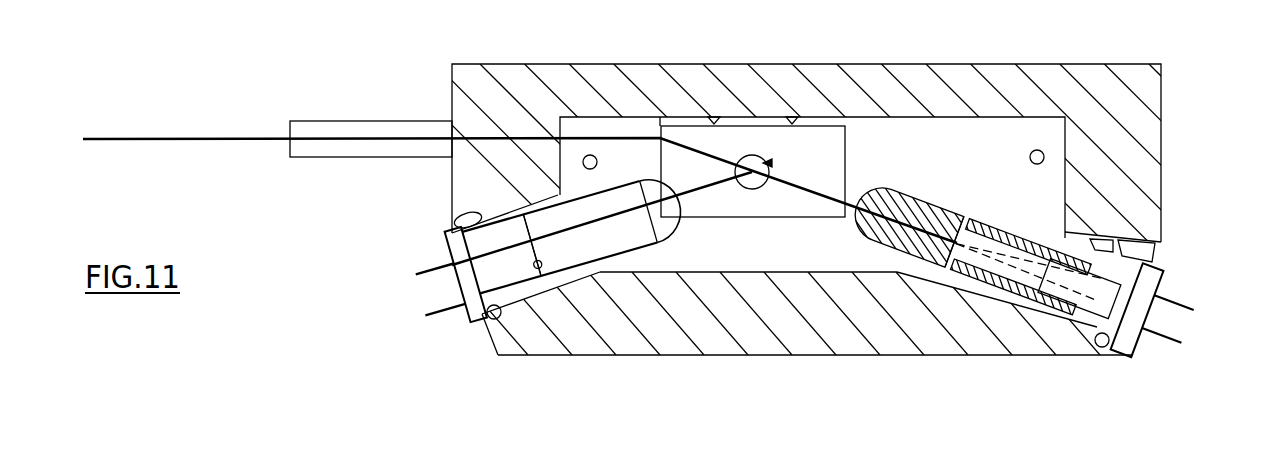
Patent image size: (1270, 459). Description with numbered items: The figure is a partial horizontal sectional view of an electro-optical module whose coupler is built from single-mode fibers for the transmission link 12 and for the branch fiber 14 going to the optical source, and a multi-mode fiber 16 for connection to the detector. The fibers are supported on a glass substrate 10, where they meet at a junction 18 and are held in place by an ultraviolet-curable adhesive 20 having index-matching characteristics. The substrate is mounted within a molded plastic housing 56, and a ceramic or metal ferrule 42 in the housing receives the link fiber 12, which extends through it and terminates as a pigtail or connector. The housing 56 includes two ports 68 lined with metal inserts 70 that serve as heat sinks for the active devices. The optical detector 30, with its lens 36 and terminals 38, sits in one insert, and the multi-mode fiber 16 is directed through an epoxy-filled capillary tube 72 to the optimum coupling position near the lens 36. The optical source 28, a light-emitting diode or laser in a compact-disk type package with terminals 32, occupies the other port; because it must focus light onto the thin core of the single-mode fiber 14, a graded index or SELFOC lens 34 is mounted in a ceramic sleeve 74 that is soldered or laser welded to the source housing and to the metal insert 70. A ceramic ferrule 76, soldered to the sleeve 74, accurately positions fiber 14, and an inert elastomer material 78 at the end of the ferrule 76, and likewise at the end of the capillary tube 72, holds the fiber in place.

The glass substrate 10 is at (846, 133).
The link fiber 12 is at (222, 137).
The branch fiber 14 is at (792, 186).
The branch fiber 16 is at (720, 182).
The junction 18 is at (770, 163).
The ultraviolet-curable adhesive 20 is at (747, 156).
The optical source 28 is at (1170, 275).
The optical detector 30 is at (484, 279).
The terminals 32 is at (1188, 307).
The lens 34 is at (1063, 282).
The lens 36 is at (530, 250).
The terminals 38 is at (430, 277).
The ferrule 42 is at (350, 120).
The molded plastic housing 56 is at (775, 62).
The ports 68 is at (500, 353).
The metal inserts 70 is at (500, 210).
The capillary tube 72 is at (635, 247).
The ceramic sleeve 74 is at (990, 216).
The ceramic ferrule 76 is at (930, 203).
The inert elastomer material 78 is at (677, 228).